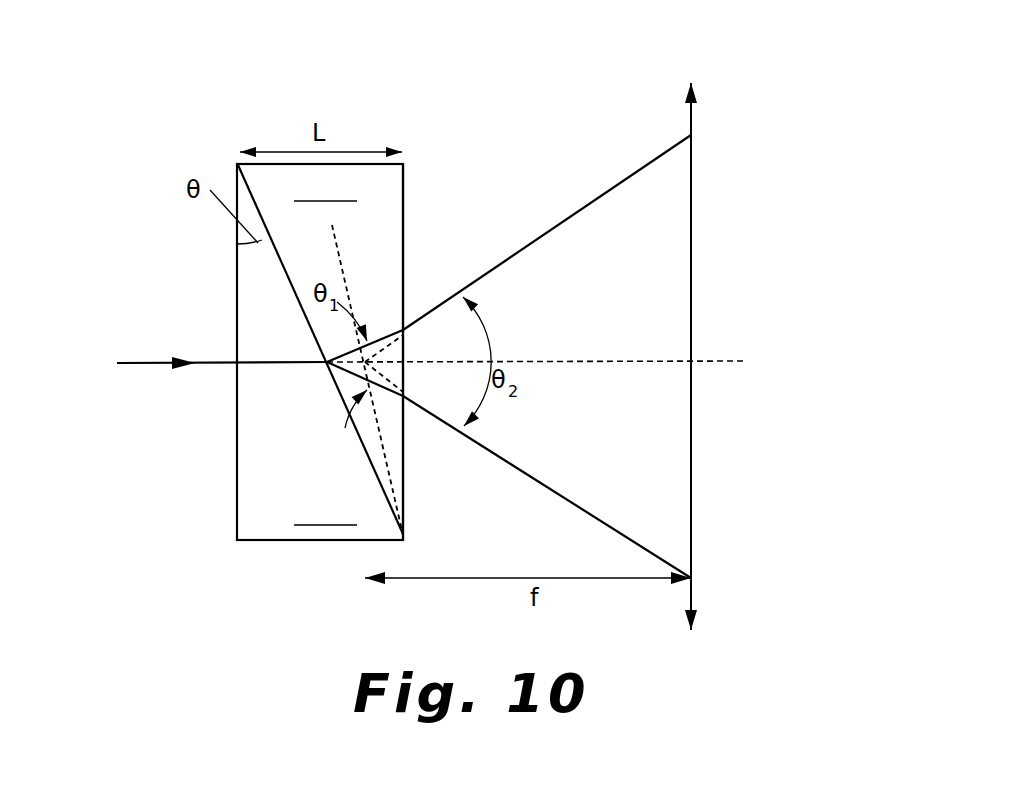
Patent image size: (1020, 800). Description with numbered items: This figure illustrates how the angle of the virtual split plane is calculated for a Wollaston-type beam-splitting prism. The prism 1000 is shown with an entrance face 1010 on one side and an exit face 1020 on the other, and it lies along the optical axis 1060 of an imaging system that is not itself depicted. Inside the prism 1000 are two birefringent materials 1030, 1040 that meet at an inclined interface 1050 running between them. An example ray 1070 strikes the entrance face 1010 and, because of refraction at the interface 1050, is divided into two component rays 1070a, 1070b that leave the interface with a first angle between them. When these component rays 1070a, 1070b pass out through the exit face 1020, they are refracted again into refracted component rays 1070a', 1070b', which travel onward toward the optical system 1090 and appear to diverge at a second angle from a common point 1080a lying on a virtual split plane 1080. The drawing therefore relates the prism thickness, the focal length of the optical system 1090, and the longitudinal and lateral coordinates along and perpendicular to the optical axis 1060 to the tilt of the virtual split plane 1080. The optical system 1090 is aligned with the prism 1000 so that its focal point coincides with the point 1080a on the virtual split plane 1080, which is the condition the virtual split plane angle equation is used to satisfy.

The prism 1000 is at (472, 122).
The entrance face 1010 is at (237, 514).
The exit face 1020 is at (404, 508).
The birefringent material 1030 is at (325, 511).
The birefringent material 1040 is at (325, 187).
The interface 1050 is at (288, 275).
The optical axis 1060 is at (708, 360).
The ray 1070 is at (222, 349).
The component ray 1070a is at (416, 296).
The component ray 1070b is at (423, 435).
The refracted component ray 1070a' is at (547, 214).
The refracted component ray 1070b' is at (547, 487).
The virtual split plane 1080 is at (340, 255).
The point 1080a is at (365, 362).
The optical system 1090 is at (692, 122).